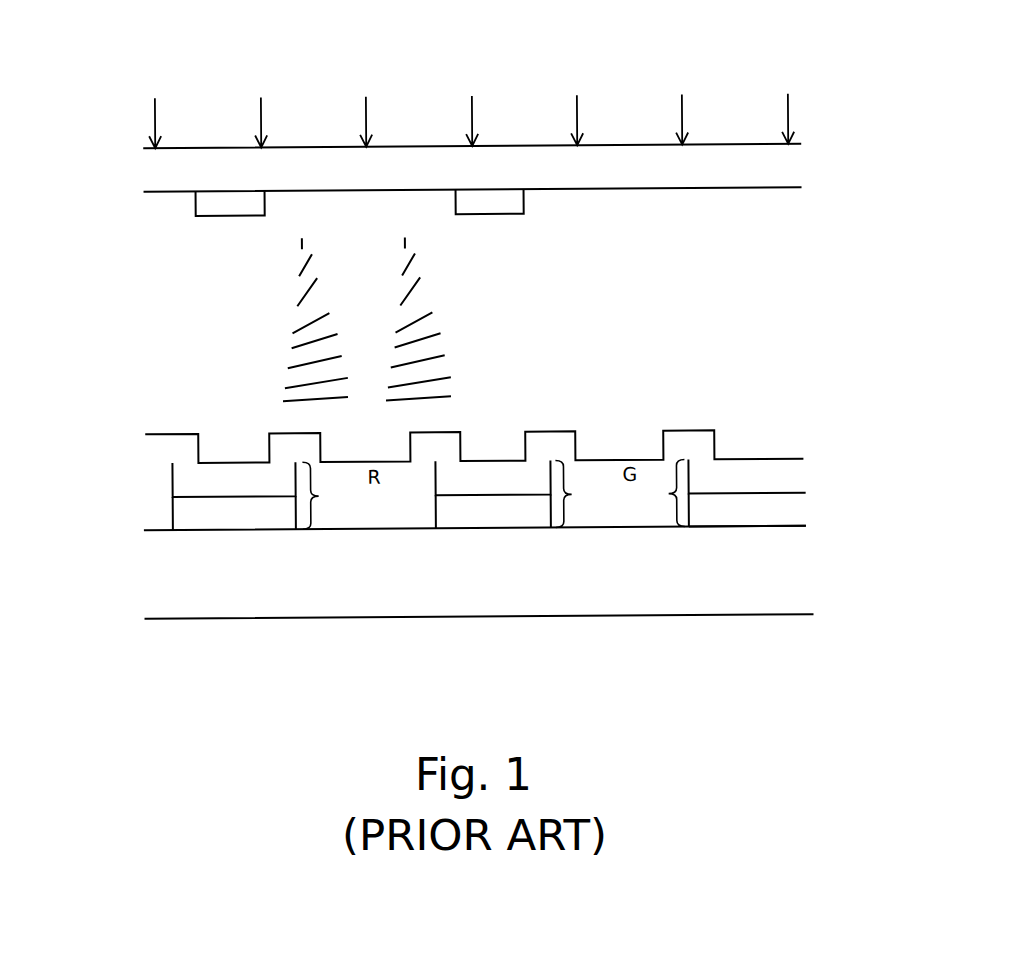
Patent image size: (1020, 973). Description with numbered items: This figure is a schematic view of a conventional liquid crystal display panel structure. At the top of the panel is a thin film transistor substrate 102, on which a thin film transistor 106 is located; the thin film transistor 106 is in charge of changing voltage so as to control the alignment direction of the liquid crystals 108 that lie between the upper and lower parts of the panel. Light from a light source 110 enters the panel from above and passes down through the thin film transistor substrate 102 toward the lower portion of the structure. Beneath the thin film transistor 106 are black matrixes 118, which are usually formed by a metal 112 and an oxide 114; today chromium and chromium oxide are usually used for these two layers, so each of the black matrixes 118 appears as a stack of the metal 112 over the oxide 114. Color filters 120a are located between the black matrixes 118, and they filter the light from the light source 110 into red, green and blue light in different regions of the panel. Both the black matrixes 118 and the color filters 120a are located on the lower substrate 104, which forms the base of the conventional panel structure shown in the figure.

The thin film transistor substrate 102 is at (160, 167).
The substrate 104 is at (165, 568).
The thin film transistor 106 is at (207, 203).
The liquid crystals 108 is at (453, 333).
The light source 110 is at (752, 70).
The metal 112 is at (185, 481).
The oxide 114 is at (185, 514).
The black matrixes 118 is at (493, 495).
The color filters 120a is at (278, 447).